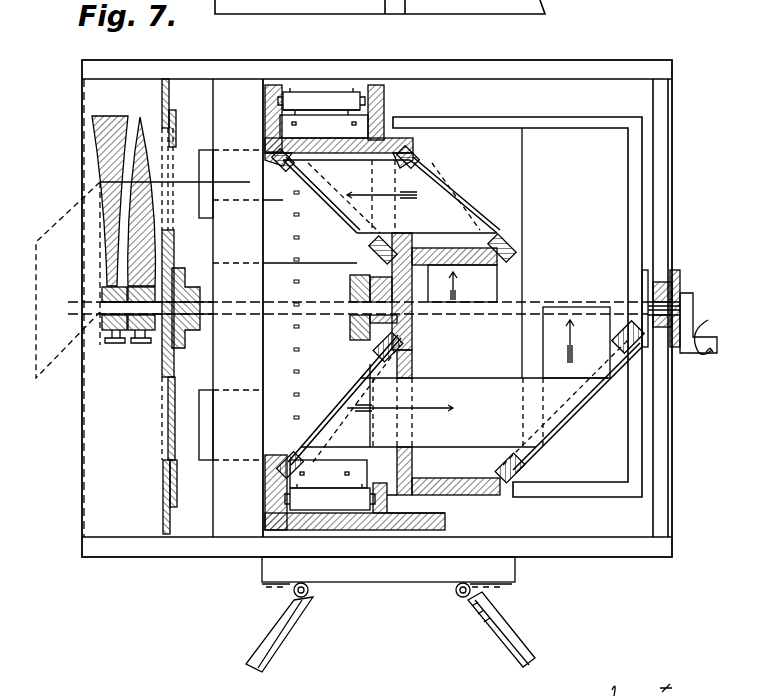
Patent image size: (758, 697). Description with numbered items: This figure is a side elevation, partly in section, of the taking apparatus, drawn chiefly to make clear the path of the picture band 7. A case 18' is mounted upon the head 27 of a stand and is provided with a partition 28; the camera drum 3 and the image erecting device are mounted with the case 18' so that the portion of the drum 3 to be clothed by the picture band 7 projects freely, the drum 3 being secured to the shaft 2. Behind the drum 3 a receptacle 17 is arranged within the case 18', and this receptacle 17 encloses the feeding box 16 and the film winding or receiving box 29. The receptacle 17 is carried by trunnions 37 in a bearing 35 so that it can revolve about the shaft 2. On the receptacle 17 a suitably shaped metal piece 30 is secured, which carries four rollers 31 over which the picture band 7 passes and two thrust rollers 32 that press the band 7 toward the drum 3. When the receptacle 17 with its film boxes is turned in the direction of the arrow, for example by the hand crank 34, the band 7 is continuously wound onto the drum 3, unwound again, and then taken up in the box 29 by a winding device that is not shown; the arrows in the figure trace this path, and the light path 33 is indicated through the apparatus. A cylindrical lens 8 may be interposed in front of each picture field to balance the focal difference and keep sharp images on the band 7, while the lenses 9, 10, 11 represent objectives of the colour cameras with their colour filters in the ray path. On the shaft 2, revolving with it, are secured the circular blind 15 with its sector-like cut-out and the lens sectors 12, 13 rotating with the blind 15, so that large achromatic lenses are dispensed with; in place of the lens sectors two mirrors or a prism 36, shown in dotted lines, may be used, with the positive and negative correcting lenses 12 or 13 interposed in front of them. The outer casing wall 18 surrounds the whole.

The shaft 2 is at (98, 313).
The drum 3 is at (317, 127).
The picture band 7 is at (268, 246).
The cylindrical lens 8 is at (199, 167).
The lens 9 is at (345, 248).
The lens 10 is at (133, 332).
The lens 11 is at (370, 364).
The lens sector 12 is at (176, 242).
The lens sector 13 is at (108, 155).
The circular blind 15 is at (176, 118).
The feeding box 16 is at (383, 308).
The receptacle 17 is at (535, 117).
The outer casing 18 is at (377, 322).
The case 18' is at (679, 308).
The head of a stand 27 is at (397, 580).
The partition 28 is at (222, 113).
The film winding or receiving box 29 is at (551, 253).
The metal piece 30 is at (385, 105).
The roller 31 is at (417, 160).
The thrust roller 32 is at (325, 596).
The light beam 33 is at (400, 290).
The hand crank 34 is at (703, 354).
The bearing 35 is at (676, 283).
The prism 36 is at (72, 360).
The trunnion 37 is at (688, 300).